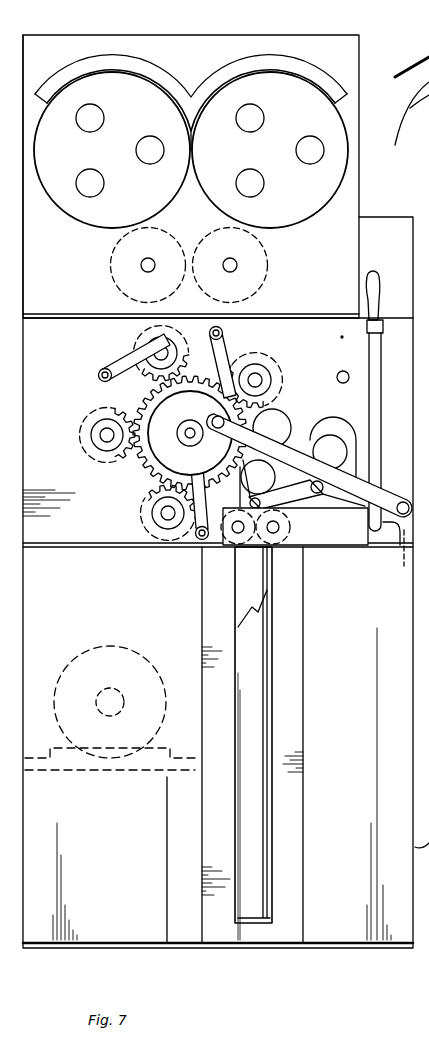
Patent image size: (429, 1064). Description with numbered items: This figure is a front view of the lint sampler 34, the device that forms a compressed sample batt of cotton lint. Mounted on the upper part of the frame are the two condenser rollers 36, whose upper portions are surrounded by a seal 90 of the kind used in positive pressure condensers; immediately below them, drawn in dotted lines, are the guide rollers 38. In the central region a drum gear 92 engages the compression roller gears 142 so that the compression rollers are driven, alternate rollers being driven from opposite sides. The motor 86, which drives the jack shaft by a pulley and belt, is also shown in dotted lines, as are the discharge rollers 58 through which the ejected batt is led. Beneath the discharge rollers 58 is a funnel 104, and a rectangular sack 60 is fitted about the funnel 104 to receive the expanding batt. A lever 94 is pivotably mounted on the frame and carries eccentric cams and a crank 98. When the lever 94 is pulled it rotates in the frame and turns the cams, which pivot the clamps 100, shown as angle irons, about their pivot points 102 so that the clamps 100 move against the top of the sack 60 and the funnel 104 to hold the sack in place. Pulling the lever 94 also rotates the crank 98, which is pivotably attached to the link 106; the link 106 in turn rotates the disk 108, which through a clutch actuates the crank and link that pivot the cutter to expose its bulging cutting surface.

The lint sampler 34 is at (366, 38).
The condenser rollers 36 is at (58, 212).
The guide rollers 38 is at (110, 280).
The discharge rollers 58 is at (215, 543).
The sack 60 is at (270, 703).
The motor 86 is at (107, 645).
The seal 90 is at (212, 84).
The drum gear 92 is at (138, 466).
The lever 94 is at (378, 282).
The crank 98 is at (388, 543).
The clamps 100 is at (334, 535).
The pivot points 102 is at (405, 547).
The funnel 104 is at (272, 620).
The link 106 is at (267, 442).
The disk 108 is at (196, 416).
The compression roller gears 142 is at (133, 350).